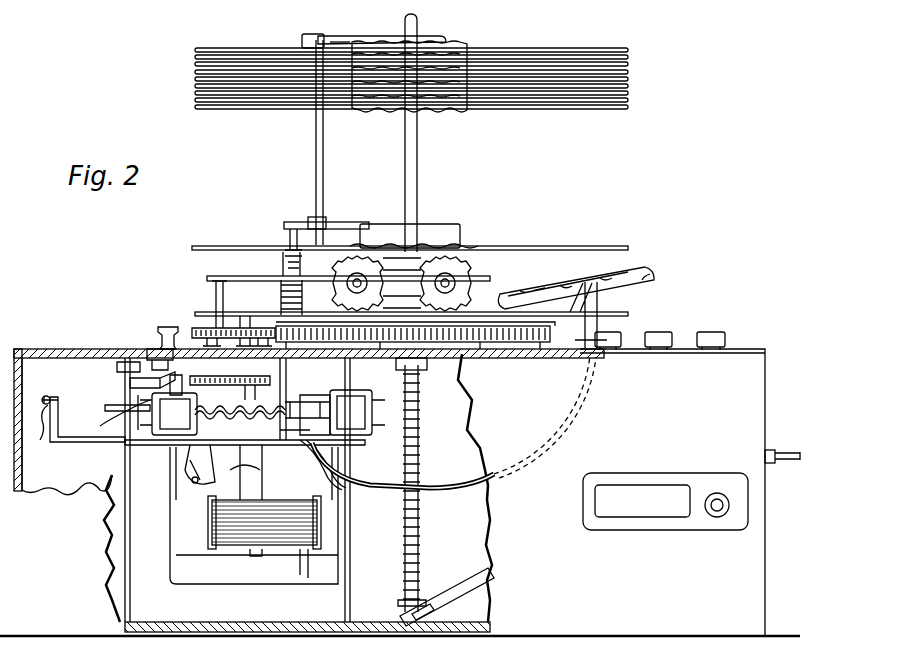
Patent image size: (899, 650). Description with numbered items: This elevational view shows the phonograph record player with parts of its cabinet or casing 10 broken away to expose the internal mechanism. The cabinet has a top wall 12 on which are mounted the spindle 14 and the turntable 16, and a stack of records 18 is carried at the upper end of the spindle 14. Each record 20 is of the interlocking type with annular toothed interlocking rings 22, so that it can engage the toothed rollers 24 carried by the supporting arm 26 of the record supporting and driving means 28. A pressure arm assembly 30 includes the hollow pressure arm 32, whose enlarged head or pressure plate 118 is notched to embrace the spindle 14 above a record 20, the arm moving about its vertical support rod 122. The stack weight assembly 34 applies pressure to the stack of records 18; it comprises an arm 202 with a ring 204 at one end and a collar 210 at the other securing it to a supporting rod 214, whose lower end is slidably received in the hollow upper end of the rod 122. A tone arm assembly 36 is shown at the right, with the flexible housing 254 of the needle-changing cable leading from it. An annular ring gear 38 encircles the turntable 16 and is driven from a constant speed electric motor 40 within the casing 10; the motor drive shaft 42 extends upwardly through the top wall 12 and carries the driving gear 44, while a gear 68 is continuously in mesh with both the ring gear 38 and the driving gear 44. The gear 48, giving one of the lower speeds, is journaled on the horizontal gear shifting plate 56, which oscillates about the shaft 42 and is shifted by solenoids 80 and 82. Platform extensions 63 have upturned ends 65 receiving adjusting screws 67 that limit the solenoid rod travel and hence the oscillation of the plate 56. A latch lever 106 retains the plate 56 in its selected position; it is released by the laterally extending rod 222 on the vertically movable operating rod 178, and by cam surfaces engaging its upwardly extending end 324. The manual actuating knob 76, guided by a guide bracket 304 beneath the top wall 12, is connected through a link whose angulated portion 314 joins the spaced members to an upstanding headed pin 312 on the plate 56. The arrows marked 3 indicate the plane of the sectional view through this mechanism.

The cabinet or casing 10 is at (752, 372).
The top wall 12 is at (72, 350).
The spindle 14 is at (417, 181).
The turntable 16 is at (540, 318).
The stack of records 18 is at (605, 37).
The record 20 is at (580, 247).
The annular toothed interlocking rings 22 is at (462, 247).
The toothed rollers 24 is at (470, 283).
The supporting arm 26 is at (250, 278).
The record supporting and driving means 28 is at (270, 264).
The pressure arm assembly 30 is at (379, 214).
The pressure arm 32 is at (338, 222).
The stack weight assembly 34 is at (346, 30).
The tone arm assembly 36 is at (644, 268).
The ring gear 38 is at (502, 344).
The electric motor 40 is at (238, 530).
The drive shaft 42 is at (262, 494).
The driving gear 44 is at (245, 325).
The gear 48 is at (205, 325).
The gear supporting and gear shifting plate 56 is at (178, 385).
The extensions 63 is at (82, 428).
The upturned ends 65 is at (42, 444).
The adjusting screws 67 is at (44, 397).
The gear 68 is at (268, 328).
The manual actuating knob 76 is at (147, 318).
The solenoid member 80 is at (172, 420).
The solenoid member 82 is at (360, 432).
The latch lever 106 is at (184, 447).
The pressure arm head 118 is at (440, 230).
The vertical support rod 122 is at (316, 235).
The operating rod 178 is at (280, 240).
The arm 202 is at (350, 36).
The ring 204 is at (438, 42).
The collar 210 is at (302, 40).
The supporting rod 214 is at (316, 140).
The laterally extending rod 222 is at (335, 470).
The flexible housing 254 is at (445, 486).
The guide bracket 304 is at (150, 352).
The upstanding headed pin 312 is at (140, 404).
The angulated portion 314 is at (130, 384).
The upwardly extending end 324 is at (178, 334).
The section line 3 is at (78, 366).